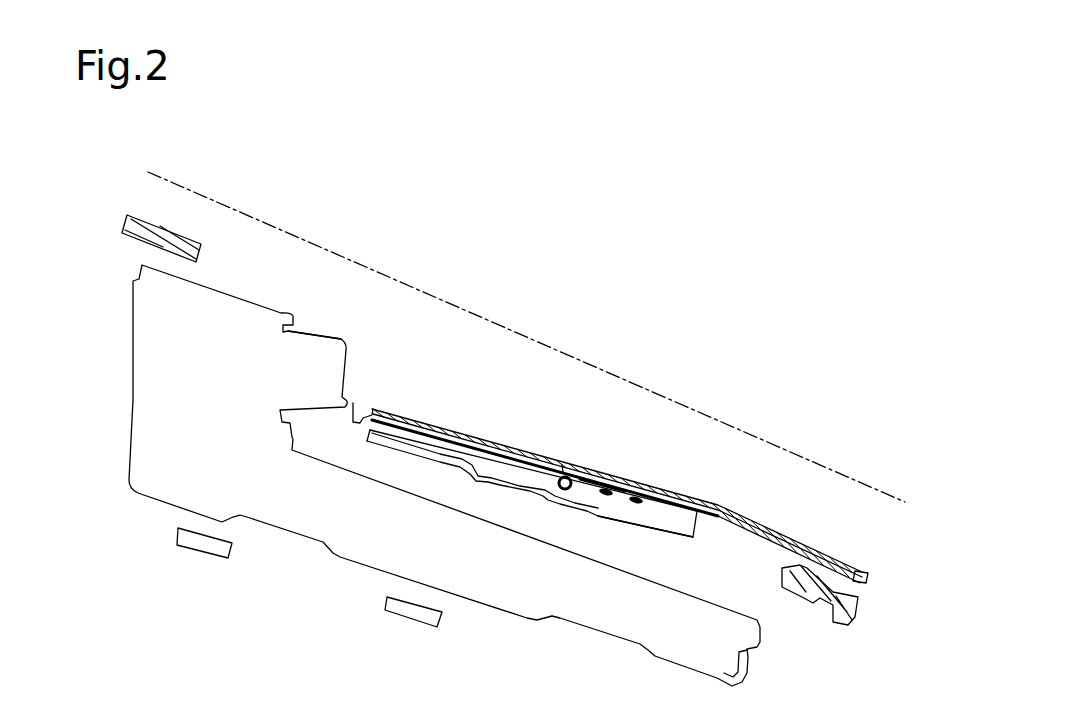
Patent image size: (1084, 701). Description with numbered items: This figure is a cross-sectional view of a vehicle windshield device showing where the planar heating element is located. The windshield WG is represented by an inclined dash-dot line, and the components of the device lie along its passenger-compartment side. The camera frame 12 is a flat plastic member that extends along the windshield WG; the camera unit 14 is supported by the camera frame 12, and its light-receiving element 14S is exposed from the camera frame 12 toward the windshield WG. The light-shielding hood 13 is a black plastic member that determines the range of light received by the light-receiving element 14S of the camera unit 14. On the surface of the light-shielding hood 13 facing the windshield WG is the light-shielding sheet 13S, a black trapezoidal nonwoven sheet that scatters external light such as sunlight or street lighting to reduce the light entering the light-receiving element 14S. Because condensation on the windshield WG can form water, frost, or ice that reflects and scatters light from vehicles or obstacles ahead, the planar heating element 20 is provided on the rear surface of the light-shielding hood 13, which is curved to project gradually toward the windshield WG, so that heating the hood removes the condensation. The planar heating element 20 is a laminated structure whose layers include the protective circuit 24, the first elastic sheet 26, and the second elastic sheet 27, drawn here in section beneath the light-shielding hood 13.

The windshield WG is at (467, 313).
The camera frame 12 is at (843, 625).
The light-shielding hood 13 is at (858, 571).
The light-shielding sheet 13S is at (592, 476).
The camera unit 14 is at (248, 302).
The light-receiving element 14S is at (320, 331).
The planar heating element 20 is at (677, 518).
The protective circuit 24 is at (570, 491).
The first elastic sheet 26 is at (620, 503).
The second elastic sheet 27 is at (510, 490).